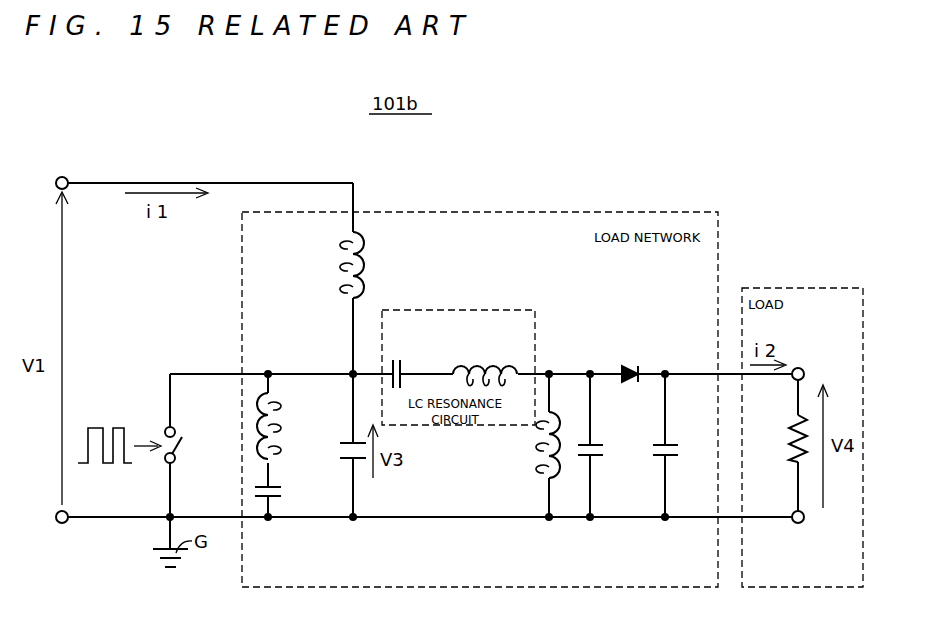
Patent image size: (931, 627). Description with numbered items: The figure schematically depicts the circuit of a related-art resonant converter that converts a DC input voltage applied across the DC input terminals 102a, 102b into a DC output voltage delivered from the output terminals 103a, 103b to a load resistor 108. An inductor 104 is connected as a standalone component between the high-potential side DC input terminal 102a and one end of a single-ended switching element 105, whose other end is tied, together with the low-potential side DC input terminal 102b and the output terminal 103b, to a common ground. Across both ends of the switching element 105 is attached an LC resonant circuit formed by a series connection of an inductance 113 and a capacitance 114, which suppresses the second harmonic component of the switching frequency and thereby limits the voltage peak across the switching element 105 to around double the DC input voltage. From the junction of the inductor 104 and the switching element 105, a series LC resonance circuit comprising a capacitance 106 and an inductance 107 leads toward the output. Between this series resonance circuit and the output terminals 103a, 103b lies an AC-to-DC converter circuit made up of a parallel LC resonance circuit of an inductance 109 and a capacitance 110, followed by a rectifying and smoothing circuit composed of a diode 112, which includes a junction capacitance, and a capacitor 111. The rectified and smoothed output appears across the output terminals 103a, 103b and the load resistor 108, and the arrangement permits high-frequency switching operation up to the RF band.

The DC input terminal 102a is at (64, 176).
The DC input terminal 102b is at (64, 524).
The output terminal 103a is at (800, 366).
The output terminal 103b is at (798, 524).
The inductor 104 is at (366, 272).
The switching element 105 is at (180, 440).
The capacitance 106 is at (397, 358).
The inductance 107 is at (490, 364).
The load resistor 108 is at (790, 440).
The inductance 109 is at (538, 450).
The capacitance 110 is at (598, 440).
The capacitor 111 is at (672, 440).
The diode 112 is at (628, 366).
The inductance 113 is at (282, 420).
The capacitance 114 is at (282, 488).